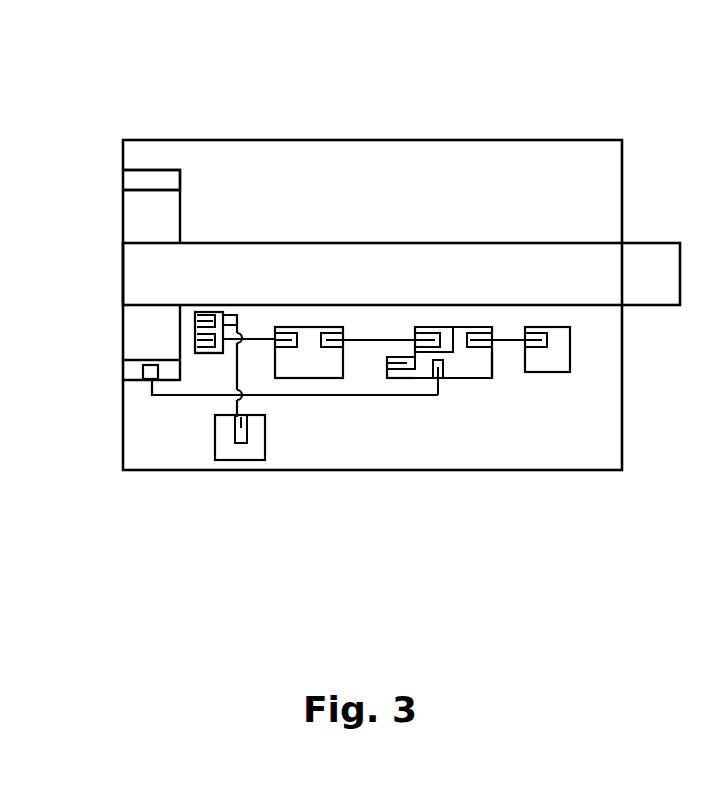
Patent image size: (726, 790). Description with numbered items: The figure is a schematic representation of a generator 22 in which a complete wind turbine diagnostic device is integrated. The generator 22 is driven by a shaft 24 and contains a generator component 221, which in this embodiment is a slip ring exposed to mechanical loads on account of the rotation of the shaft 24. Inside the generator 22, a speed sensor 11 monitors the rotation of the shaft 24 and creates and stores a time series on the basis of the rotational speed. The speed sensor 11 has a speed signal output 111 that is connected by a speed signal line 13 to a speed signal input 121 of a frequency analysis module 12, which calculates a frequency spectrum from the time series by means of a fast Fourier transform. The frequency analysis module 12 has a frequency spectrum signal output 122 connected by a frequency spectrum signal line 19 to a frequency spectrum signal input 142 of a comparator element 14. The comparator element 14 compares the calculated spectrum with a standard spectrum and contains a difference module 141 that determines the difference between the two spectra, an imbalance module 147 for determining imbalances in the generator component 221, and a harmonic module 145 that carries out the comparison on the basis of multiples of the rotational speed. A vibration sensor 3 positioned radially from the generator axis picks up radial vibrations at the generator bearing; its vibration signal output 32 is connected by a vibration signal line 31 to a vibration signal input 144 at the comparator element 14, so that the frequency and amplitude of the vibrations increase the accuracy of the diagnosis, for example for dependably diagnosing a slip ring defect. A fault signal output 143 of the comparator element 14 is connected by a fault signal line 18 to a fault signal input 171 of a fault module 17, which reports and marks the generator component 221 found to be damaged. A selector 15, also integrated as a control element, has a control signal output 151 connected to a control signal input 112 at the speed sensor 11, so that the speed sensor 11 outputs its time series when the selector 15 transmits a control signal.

The vibration sensor 3 is at (137, 180).
The speed sensor 11 is at (188, 348).
The frequency analysis module 12 is at (305, 372).
The speed signal line 13 is at (257, 338).
The comparator element 14 is at (477, 372).
The selector 15 is at (237, 460).
The fault module 17 is at (565, 353).
The fault signal line 18 is at (232, 323).
The frequency spectrum signal line 19 is at (383, 340).
The generator 22 is at (442, 138).
The shaft 24 is at (662, 262).
The vibration signal line 31 is at (160, 400).
The vibration signal output 32 is at (147, 360).
The speed signal output 111 is at (208, 350).
The control signal input 112 is at (207, 317).
The speed signal input 121 is at (283, 330).
The frequency spectrum signal output 122 is at (333, 330).
The difference module 141 is at (447, 333).
The frequency spectrum signal input 142 is at (428, 333).
The fault signal output 143 is at (497, 372).
The vibration signal input 144 is at (448, 365).
The harmonic module 145 is at (403, 375).
The imbalance module 147 is at (390, 362).
The control signal output 151 is at (247, 432).
The fault signal input 171 is at (540, 333).
The generator component 221 is at (172, 202).